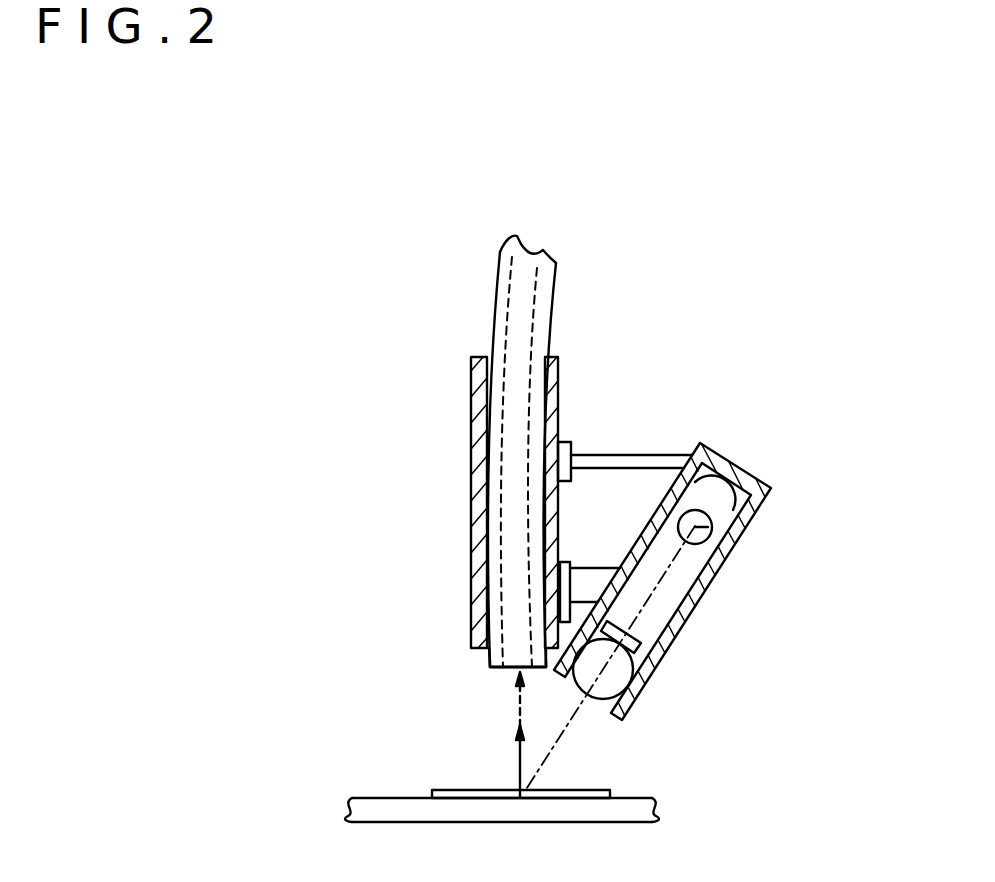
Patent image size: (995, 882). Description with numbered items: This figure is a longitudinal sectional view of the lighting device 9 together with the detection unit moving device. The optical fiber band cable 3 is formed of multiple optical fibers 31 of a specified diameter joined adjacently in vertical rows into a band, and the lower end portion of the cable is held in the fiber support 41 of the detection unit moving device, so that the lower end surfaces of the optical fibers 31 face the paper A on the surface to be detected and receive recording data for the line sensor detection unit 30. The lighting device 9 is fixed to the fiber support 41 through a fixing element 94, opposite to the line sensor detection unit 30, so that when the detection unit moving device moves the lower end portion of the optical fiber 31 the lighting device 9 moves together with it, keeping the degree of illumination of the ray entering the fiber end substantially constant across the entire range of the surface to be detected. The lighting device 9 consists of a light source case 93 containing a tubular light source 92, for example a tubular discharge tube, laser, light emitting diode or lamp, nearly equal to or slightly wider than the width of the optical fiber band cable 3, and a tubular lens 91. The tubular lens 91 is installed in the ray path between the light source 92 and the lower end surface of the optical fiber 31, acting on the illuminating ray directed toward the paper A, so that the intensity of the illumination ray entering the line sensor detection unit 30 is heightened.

The optical fiber band cable 3 is at (484, 275).
The optical fiber 31 is at (500, 372).
The fiber support 41 is at (477, 487).
The line sensor detection unit 30 is at (410, 717).
The paper A is at (432, 790).
The lighting device 9 is at (672, 659).
The fixing element 94 is at (648, 455).
The light source case 93 is at (676, 595).
The tubular light source 92 is at (705, 527).
The tubular lens 91 is at (610, 688).